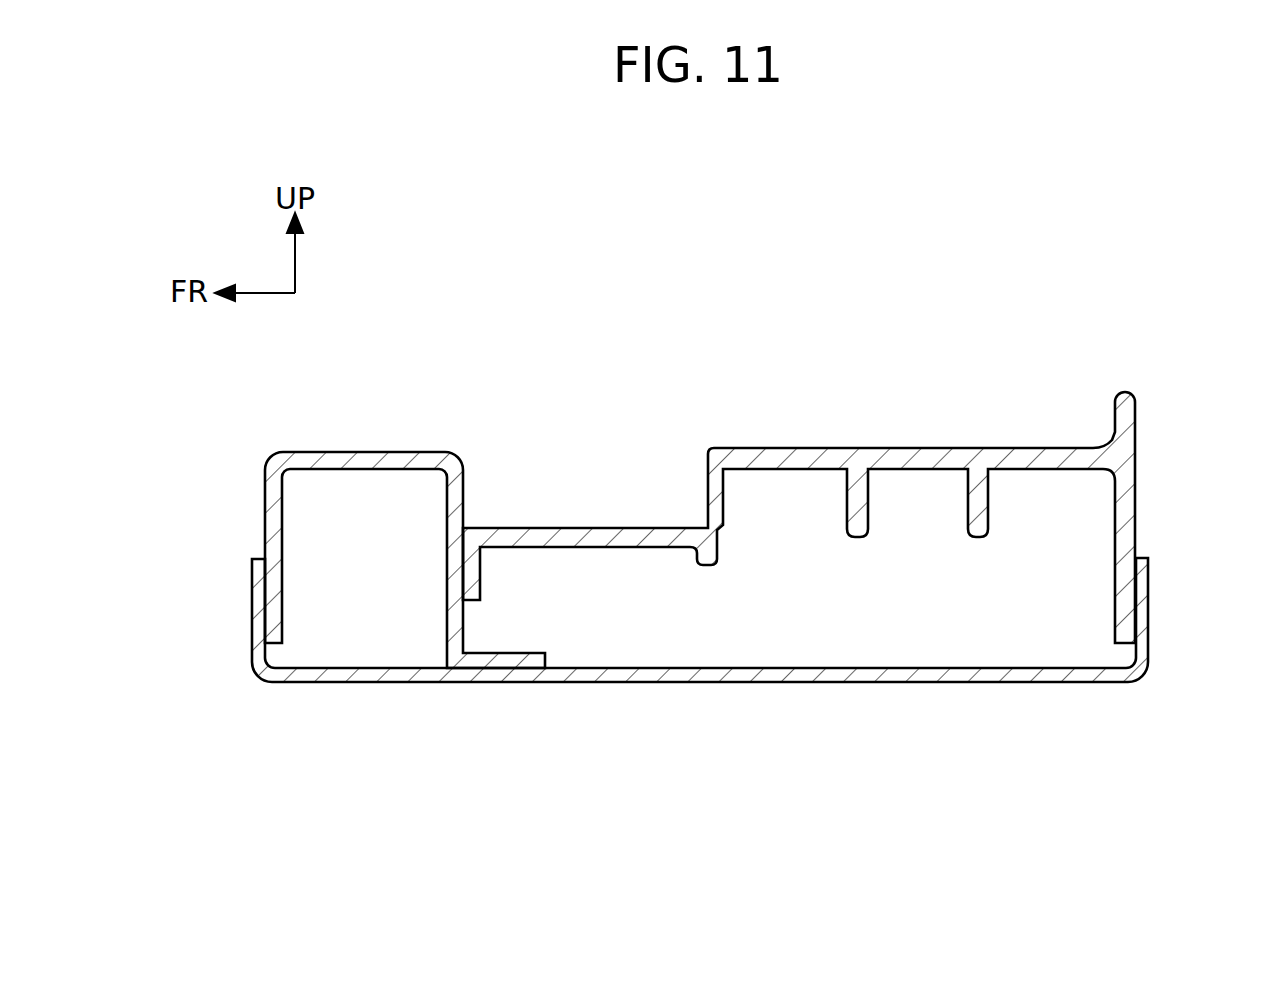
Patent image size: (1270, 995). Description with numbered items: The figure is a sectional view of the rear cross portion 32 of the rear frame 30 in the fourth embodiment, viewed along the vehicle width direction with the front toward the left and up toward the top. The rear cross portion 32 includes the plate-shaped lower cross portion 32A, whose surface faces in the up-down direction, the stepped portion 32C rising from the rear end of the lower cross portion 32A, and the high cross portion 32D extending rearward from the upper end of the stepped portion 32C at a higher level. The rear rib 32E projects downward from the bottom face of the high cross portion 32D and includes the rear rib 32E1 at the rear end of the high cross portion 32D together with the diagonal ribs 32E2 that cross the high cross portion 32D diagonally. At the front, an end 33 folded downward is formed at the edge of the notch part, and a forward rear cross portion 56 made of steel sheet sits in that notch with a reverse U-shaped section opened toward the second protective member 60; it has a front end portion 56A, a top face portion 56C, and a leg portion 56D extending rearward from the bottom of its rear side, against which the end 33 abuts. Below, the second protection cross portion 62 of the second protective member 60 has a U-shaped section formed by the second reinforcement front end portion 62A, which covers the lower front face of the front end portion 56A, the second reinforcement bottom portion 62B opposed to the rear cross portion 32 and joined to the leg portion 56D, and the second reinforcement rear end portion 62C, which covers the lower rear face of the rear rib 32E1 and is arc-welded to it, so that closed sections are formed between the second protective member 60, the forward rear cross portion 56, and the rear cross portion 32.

The rear frame 30 is at (1178, 301).
The rear cross portion 32 is at (1076, 447).
The lower cross portion 32A is at (583, 527).
The stepped portion 32C is at (703, 498).
The high cross portion 32D is at (918, 447).
The rear rib 32E is at (980, 563).
The rear rib 32E1 is at (1113, 498).
The diagonal ribs 32E2 is at (968, 503).
The end 33 is at (455, 530).
The forward rear cross portion 56 is at (307, 450).
The front end portion 56A is at (465, 500).
The top face portion 56C is at (385, 452).
The leg portion 56D is at (507, 652).
The second protection cross portion 62 is at (648, 693).
The second protective member 60 is at (700, 620).
The second reinforcement front end portion 62A is at (252, 625).
The second reinforcement bottom portion 62B is at (385, 682).
The second reinforcement rear end portion 62C is at (1148, 608).